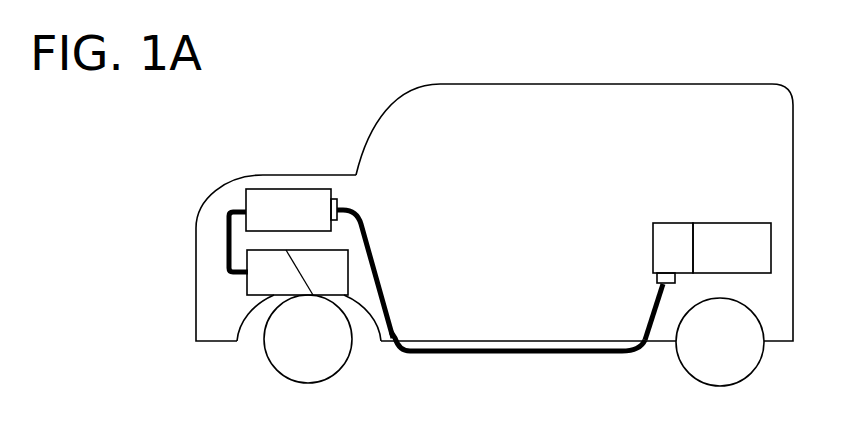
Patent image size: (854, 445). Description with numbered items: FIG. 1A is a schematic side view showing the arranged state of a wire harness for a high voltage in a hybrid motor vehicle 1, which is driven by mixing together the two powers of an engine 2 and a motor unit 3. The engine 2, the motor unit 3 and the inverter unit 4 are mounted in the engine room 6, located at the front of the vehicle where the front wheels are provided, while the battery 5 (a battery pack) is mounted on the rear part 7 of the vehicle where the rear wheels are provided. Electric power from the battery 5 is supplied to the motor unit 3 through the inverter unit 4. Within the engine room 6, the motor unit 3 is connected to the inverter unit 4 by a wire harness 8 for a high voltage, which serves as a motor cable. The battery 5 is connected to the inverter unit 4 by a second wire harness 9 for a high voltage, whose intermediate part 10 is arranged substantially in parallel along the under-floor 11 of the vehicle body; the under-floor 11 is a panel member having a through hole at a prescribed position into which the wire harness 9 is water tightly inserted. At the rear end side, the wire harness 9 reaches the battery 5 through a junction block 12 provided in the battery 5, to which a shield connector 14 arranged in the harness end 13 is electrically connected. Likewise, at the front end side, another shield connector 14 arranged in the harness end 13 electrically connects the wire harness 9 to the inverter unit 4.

The hybrid motor vehicle 1 is at (545, 75).
The engine 2 is at (334, 280).
The motor unit 3 is at (268, 283).
The inverter unit 4 is at (276, 206).
The battery 5 is at (736, 240).
The engine room 6 is at (212, 313).
The rear part 7 is at (775, 308).
The wire harness for a high voltage 8 is at (223, 244).
The wire harness for a high voltage 9 is at (427, 358).
The intermediate part 10 is at (532, 355).
The under-floor 11 is at (590, 355).
The junction block 12 is at (677, 240).
The harness end 13 is at (355, 212).
The shield connector 14 is at (341, 207).